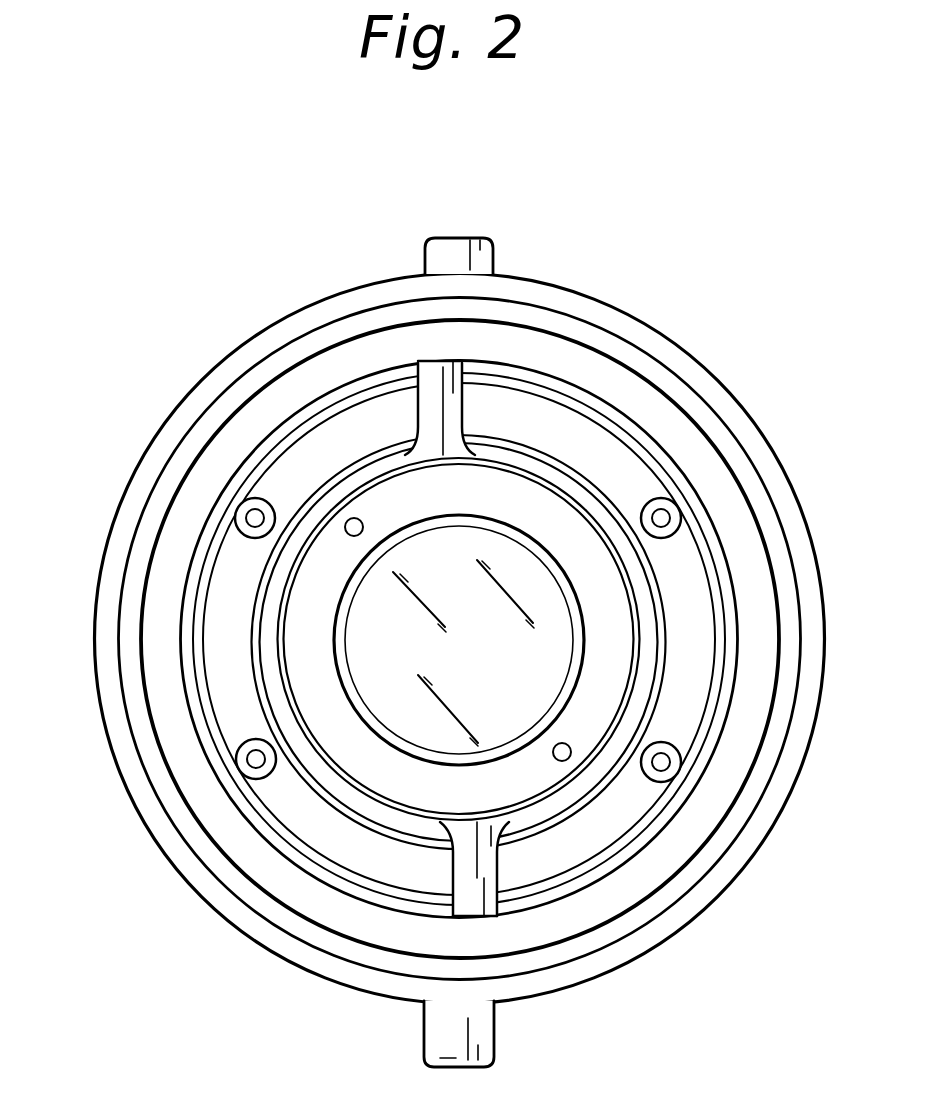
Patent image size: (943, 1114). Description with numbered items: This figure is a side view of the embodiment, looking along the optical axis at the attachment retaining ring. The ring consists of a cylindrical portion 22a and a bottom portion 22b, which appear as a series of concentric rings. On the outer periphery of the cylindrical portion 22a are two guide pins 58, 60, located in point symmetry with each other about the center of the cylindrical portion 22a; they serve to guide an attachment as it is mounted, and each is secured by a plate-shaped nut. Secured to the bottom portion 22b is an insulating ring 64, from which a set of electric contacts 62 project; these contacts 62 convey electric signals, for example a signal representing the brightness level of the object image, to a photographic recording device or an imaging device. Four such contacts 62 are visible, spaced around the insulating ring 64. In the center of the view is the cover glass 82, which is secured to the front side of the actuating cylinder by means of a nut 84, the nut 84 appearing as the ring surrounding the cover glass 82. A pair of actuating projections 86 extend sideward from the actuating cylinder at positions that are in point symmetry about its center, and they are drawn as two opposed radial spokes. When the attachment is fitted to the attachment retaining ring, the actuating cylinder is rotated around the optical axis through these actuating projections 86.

The cylindrical portion 22a is at (643, 318).
The bottom portion 22b is at (733, 517).
The guide pin 58 is at (477, 1038).
The guide pin 60 is at (446, 247).
The electric contacts 62 is at (237, 508).
The insulating ring 64 is at (327, 427).
The cover glass 82 is at (412, 718).
The nut 84 is at (292, 642).
The actuating projections 86 is at (464, 394).